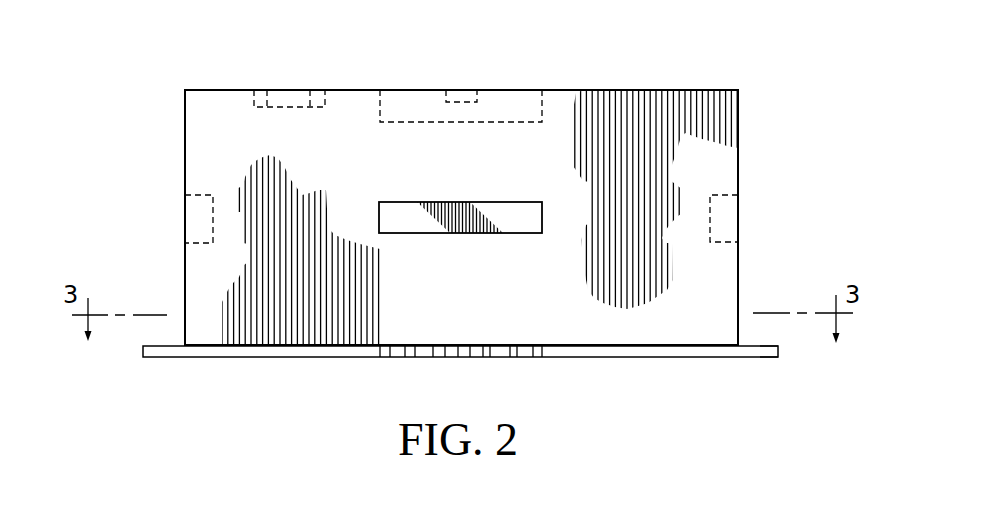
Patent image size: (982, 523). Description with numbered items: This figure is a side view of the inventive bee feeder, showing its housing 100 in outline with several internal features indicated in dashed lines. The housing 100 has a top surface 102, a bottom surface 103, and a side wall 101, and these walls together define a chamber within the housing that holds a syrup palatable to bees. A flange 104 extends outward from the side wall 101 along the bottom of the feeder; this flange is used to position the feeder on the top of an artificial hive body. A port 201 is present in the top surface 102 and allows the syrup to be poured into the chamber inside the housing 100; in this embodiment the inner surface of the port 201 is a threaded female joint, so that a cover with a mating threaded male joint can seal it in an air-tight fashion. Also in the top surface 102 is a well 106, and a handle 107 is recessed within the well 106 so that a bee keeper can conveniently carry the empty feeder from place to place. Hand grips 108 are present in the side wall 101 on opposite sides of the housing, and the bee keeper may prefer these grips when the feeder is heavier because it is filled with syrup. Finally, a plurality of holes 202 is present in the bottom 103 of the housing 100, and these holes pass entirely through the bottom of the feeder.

The housing 100 is at (160, 163).
The side wall 101 is at (184, 270).
The top surface 102 is at (660, 90).
The bottom surface 103 is at (303, 359).
The flange 104 is at (778, 350).
The well 106 is at (508, 98).
The handle 107 is at (458, 90).
The hand grip 108 is at (452, 233).
The port 201 is at (262, 90).
The holes 202 is at (485, 357).